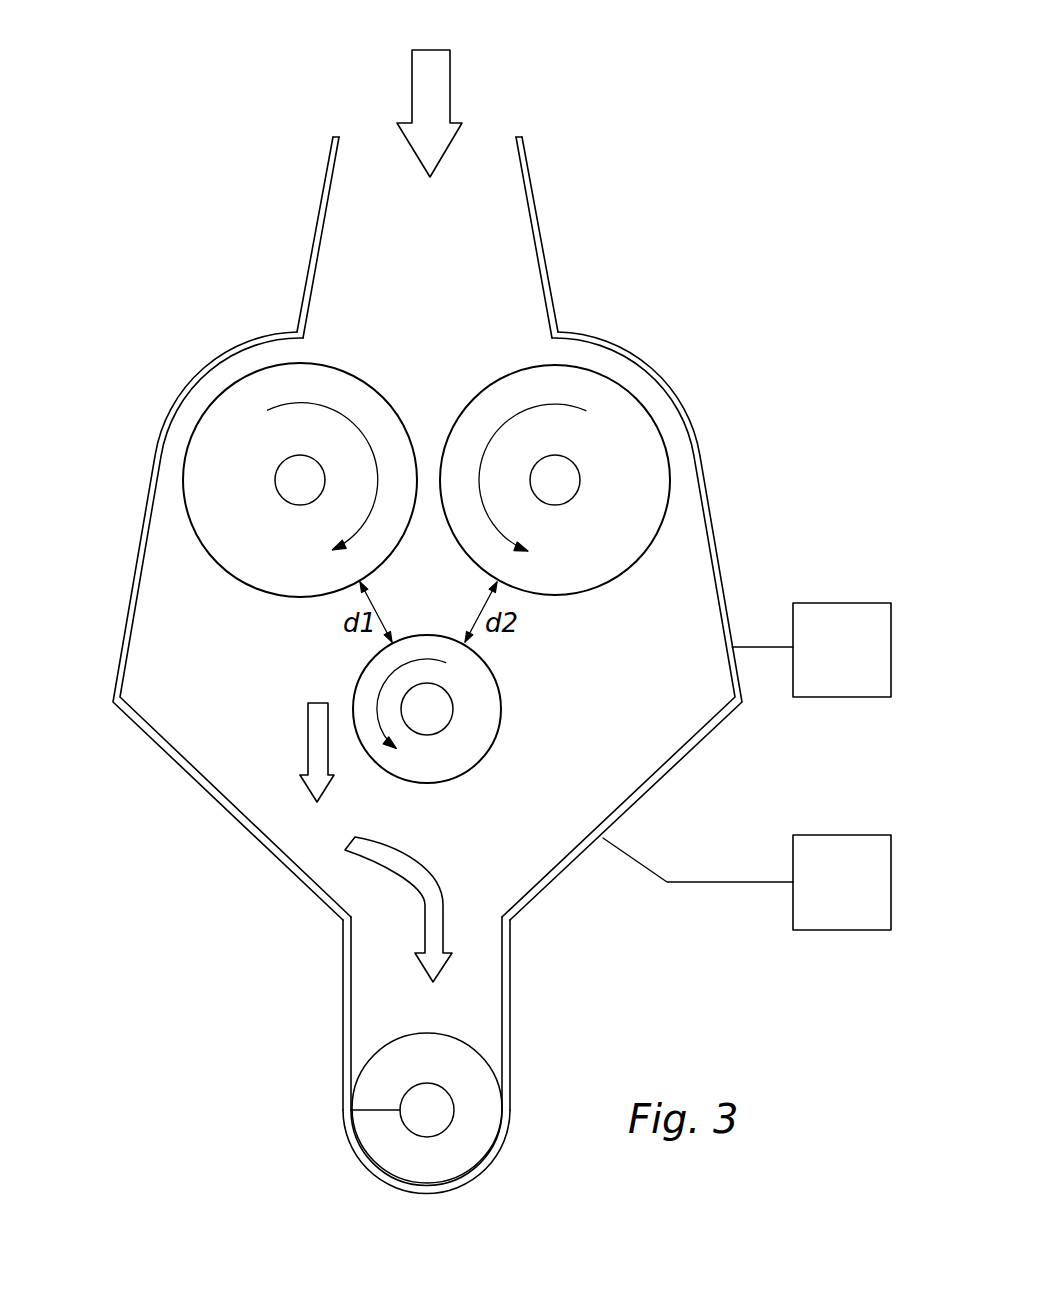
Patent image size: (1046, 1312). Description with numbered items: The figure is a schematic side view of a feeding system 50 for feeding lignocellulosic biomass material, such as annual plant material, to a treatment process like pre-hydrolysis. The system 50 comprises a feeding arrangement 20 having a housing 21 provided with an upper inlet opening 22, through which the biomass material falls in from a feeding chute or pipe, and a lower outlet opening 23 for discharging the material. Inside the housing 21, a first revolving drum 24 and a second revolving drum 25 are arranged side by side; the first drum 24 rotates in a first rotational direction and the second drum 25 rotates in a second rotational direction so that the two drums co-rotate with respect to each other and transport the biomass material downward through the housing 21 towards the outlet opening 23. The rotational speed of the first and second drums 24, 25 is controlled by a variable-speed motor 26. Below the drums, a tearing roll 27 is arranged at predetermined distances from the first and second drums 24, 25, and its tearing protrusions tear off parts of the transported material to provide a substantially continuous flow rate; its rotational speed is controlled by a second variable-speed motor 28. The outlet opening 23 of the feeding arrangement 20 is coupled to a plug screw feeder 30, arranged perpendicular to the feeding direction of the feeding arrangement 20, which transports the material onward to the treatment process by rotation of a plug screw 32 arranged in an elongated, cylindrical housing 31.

The feeding arrangement 20 is at (582, 322).
The housing 21 is at (548, 272).
The inlet opening 22 is at (361, 135).
The outlet opening 23 is at (465, 913).
The first revolving drum 24 is at (237, 383).
The second revolving drum 25 is at (642, 403).
The motor 26 is at (843, 835).
The tearing roll 27 is at (502, 702).
The motor 28 is at (843, 603).
The plug screw feeder 30 is at (522, 1022).
The housing 31 is at (480, 1173).
The plug screw 32 is at (487, 1060).
The feeding system 50 is at (645, 157).